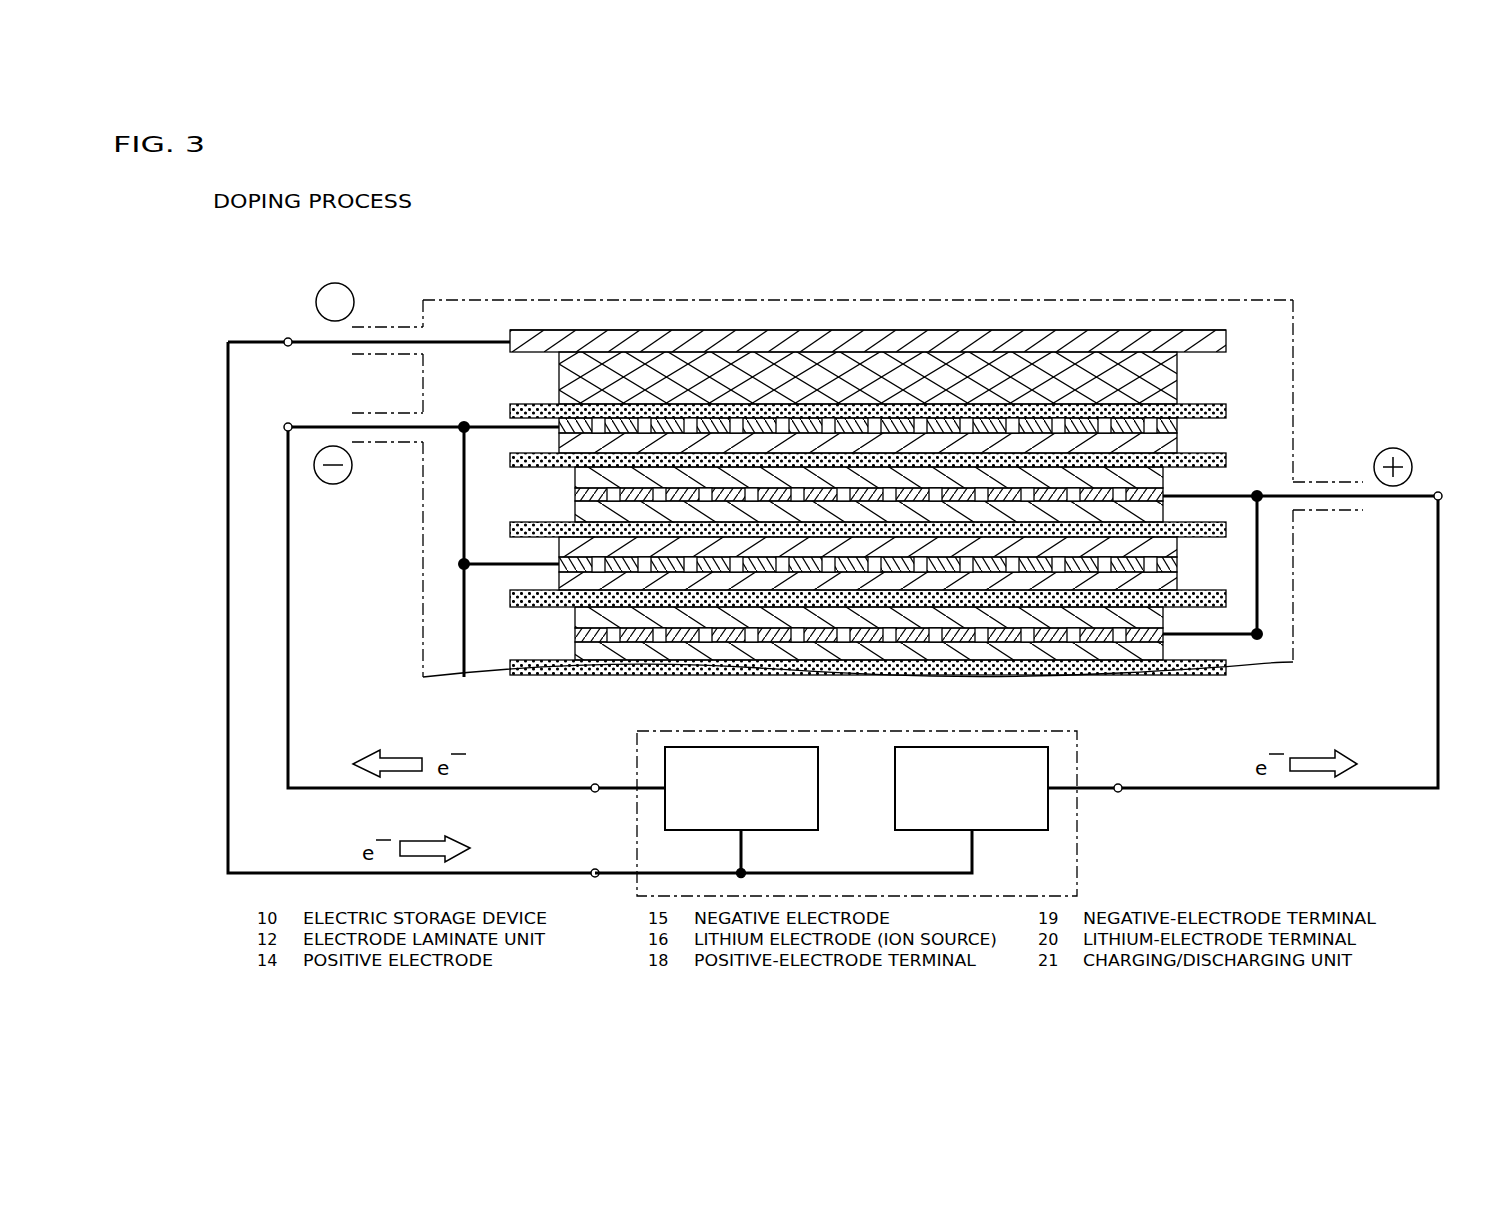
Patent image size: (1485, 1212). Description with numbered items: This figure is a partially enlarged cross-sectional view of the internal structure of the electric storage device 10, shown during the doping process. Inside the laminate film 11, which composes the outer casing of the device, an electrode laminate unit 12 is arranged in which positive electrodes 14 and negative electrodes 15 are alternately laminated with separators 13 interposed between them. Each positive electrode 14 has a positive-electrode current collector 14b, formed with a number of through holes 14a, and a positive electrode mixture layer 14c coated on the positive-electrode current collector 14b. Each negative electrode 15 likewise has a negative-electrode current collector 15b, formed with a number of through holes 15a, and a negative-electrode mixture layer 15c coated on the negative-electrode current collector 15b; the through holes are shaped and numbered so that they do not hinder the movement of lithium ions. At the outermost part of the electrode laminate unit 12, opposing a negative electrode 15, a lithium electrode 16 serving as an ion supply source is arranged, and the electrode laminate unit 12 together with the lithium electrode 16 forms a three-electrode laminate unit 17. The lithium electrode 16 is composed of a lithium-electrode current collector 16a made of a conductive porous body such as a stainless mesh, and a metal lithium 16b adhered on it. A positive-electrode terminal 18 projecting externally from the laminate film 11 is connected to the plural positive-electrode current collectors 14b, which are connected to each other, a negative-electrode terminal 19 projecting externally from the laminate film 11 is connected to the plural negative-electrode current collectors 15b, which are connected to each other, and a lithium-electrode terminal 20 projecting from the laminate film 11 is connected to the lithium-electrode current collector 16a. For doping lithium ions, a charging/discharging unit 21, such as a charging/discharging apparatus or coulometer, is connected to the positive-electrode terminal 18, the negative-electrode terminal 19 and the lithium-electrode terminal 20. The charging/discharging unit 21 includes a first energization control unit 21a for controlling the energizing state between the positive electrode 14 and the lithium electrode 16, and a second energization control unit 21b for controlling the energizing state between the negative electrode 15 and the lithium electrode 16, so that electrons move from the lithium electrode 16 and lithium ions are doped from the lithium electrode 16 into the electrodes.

The electric storage device 10 is at (864, 465).
The laminate film 11 is at (590, 300).
The electrode laminate unit 12 is at (866, 492).
The separator 13 is at (510, 410).
The positive electrode 14 is at (759, 583).
The through hole 14a is at (797, 642).
The positive-electrode current collector 14b is at (575, 495).
The positive electrode mixture layer 14c is at (575, 478).
The negative electrode 15 is at (968, 482).
The through hole 15a is at (920, 425).
The negative-electrode current collector 15b is at (1190, 425).
The negative-electrode mixture layer 15c is at (1170, 443).
The lithium electrode 16 is at (943, 366).
The lithium-electrode current collector 16a is at (1200, 338).
The metal lithium 16b is at (1160, 375).
The three-electrode laminate unit 17 is at (1020, 331).
The positive-electrode terminal 18 is at (1438, 494).
The negative-electrode terminal 19 is at (316, 426).
The lithium-electrode terminal 20 is at (298, 341).
The charging/discharging unit 21 is at (874, 813).
The first energization control unit 21a is at (1012, 832).
The second energization control unit 21b is at (820, 789).